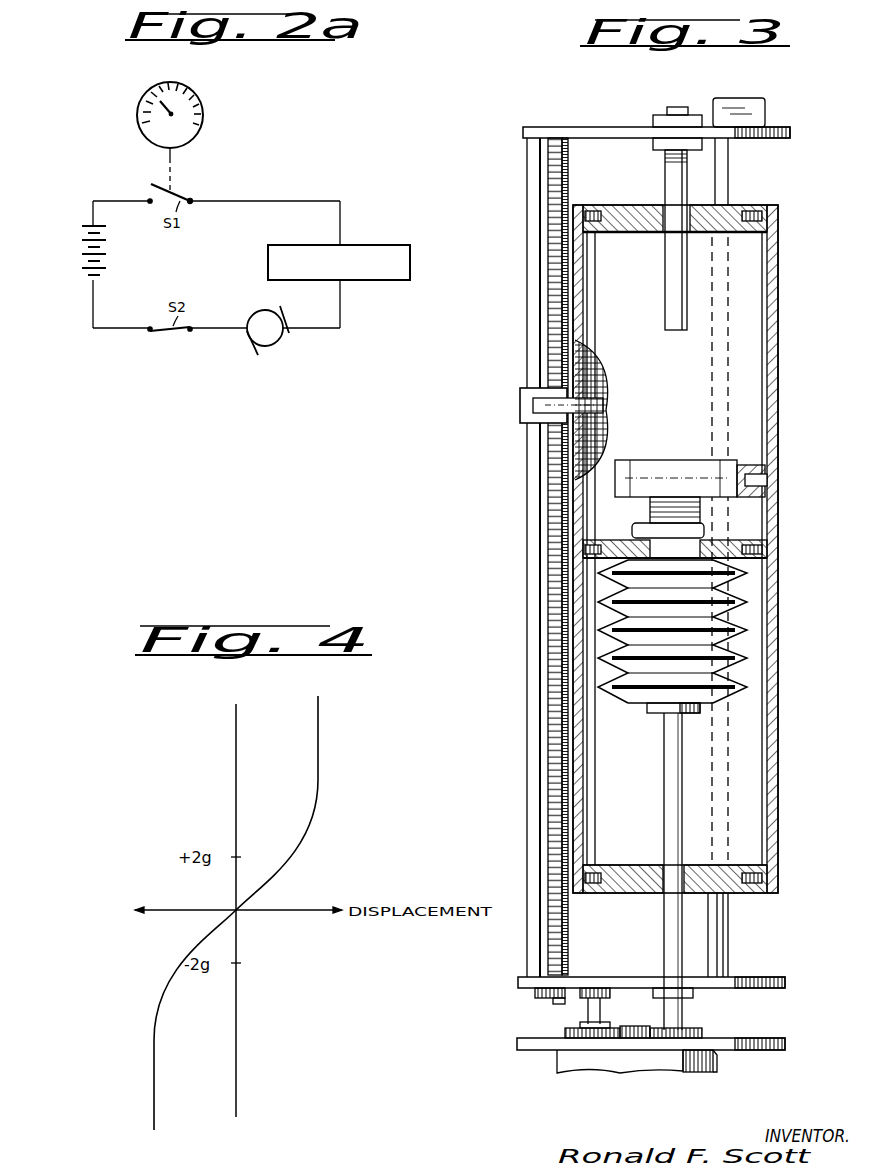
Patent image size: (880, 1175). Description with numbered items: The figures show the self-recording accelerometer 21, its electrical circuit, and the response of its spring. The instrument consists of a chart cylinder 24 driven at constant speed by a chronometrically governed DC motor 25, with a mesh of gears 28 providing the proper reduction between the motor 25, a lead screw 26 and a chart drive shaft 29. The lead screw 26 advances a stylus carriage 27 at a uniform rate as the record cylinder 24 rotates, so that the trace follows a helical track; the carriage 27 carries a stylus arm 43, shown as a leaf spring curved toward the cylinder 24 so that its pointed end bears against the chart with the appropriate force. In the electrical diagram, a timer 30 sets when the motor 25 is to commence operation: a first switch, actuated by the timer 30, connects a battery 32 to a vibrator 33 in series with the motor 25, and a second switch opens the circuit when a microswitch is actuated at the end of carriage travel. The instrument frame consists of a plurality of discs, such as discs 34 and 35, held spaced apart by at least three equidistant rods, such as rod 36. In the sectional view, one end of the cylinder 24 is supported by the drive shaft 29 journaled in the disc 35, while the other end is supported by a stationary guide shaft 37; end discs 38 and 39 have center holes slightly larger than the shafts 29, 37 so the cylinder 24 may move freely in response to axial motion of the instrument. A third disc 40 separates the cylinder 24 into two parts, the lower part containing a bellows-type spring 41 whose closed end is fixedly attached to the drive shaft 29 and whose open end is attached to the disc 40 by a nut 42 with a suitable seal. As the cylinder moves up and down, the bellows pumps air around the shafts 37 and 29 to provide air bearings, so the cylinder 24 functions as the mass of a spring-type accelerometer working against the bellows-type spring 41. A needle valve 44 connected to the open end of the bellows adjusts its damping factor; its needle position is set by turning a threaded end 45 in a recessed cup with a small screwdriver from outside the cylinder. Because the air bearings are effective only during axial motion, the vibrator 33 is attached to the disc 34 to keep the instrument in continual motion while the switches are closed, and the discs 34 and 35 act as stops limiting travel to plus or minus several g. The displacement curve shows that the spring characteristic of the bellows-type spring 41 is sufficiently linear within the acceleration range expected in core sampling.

In FIG. 3, the self-recording accelerometer 21 is at (785, 508).
In FIG. 3, the chart cylinder 24 is at (770, 726).
In FIG. 2A, the DC motor 25 is at (279, 345).
In FIG. 3, the lead screw 26 is at (575, 934).
In FIG. 3, the stylus carriage 27 is at (520, 395).
In FIG. 3, the mesh of gears 28 is at (708, 1022).
In FIG. 3, the chart drive shaft 29 is at (664, 913).
In FIG. 2A, the timer 30 is at (203, 108).
In FIG. 2A, the battery 32 is at (82, 256).
In FIG. 2A, the vibrator 33 is at (403, 246).
In FIG. 3, the vibrator 33 is at (766, 113).
In FIG. 3, the disc 34 is at (772, 140).
In FIG. 3, the disc 35 is at (787, 983).
In FIG. 3, the rod 36 is at (527, 193).
In FIG. 3, the stationary guide shaft 37 is at (677, 182).
In FIG. 3, the end disc 38 is at (735, 870).
In FIG. 3, the end disc 39 is at (740, 210).
In FIG. 3, the third disc 40 is at (768, 546).
In FIG. 3, the bellows-type spring 41 is at (745, 636).
In FIG. 3, the nut 42 is at (650, 527).
In FIG. 3, the stylus arm 43 is at (578, 418).
In FIG. 3, the needle valve 44 is at (642, 462).
In FIG. 3, the threaded end 45 is at (765, 480).